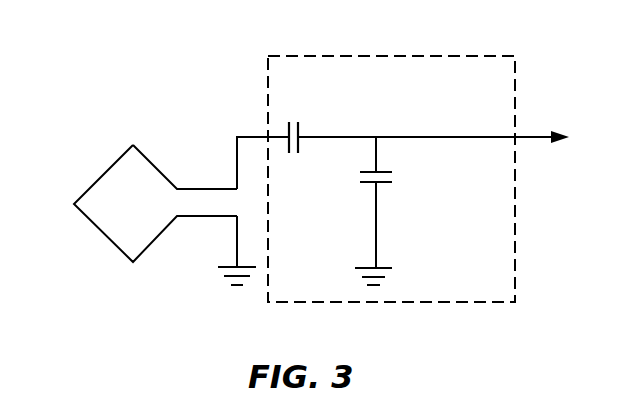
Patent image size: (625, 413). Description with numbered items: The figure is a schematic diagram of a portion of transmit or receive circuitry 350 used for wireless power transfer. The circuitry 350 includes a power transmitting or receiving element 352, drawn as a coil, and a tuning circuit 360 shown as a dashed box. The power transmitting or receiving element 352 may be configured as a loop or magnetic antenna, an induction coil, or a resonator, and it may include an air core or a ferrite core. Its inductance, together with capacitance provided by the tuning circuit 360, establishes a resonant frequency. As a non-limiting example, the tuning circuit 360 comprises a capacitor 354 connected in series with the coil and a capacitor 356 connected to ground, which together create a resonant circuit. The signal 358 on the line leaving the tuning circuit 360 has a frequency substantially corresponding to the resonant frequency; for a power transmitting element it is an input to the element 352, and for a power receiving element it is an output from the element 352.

The transmit or receive circuitry 350 is at (152, 40).
The power transmitting or receiving element 352 is at (102, 175).
The capacitor 354 is at (299, 128).
The capacitor 356 is at (380, 184).
The signal 358 is at (413, 135).
The tuning circuit 360 is at (497, 56).